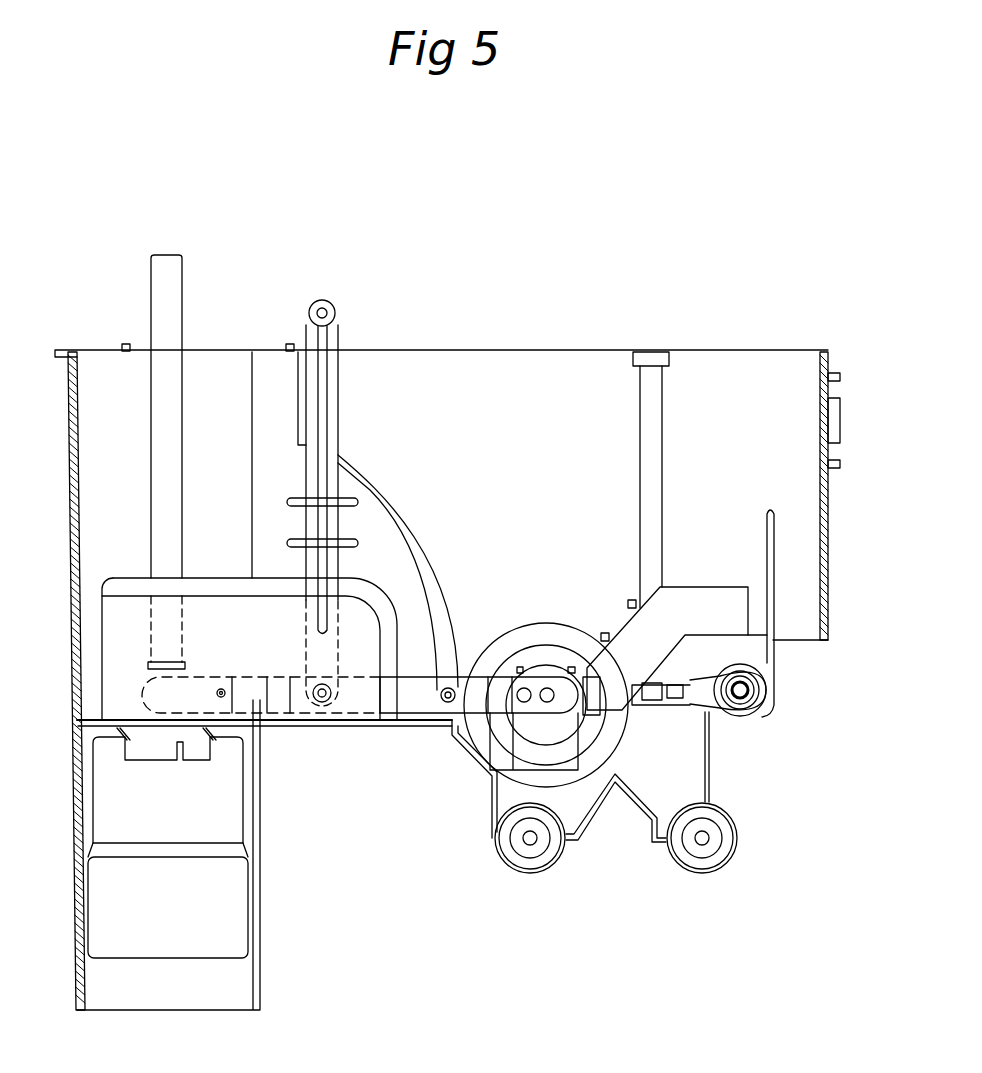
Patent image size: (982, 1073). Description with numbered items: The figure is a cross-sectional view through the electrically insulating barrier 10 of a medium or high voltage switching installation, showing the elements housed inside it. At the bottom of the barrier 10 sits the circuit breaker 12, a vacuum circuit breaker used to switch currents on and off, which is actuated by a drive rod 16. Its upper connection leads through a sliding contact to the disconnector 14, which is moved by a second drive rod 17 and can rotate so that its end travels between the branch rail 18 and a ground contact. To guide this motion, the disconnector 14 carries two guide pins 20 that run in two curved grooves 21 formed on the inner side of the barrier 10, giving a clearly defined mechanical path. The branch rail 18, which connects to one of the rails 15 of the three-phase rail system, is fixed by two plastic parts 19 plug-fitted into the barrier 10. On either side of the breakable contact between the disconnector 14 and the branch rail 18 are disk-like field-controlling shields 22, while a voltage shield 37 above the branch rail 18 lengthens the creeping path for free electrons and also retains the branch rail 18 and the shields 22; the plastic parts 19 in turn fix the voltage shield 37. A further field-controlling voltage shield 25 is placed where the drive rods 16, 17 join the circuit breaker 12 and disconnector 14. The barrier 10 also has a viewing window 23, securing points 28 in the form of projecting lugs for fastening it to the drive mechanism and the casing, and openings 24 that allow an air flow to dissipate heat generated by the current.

The electrically insulating barrier 10 is at (72, 402).
The circuit breaker 12 is at (122, 876).
The disconnector 14 is at (418, 706).
The rails 15 is at (765, 700).
The drive rod 16 is at (160, 284).
The drive rod 17 is at (335, 335).
The branch rail 18 is at (672, 705).
The plastic parts 19 is at (652, 362).
The guide pins 20 is at (452, 703).
The curved grooves 21 is at (412, 548).
The disk-like field-controlling shields 22 is at (522, 640).
The viewing window 23 is at (840, 437).
The openings 24 is at (800, 652).
The further field-controlling voltage shield 25 is at (118, 630).
The securing points 28 is at (124, 346).
The voltage shield 37 is at (690, 598).